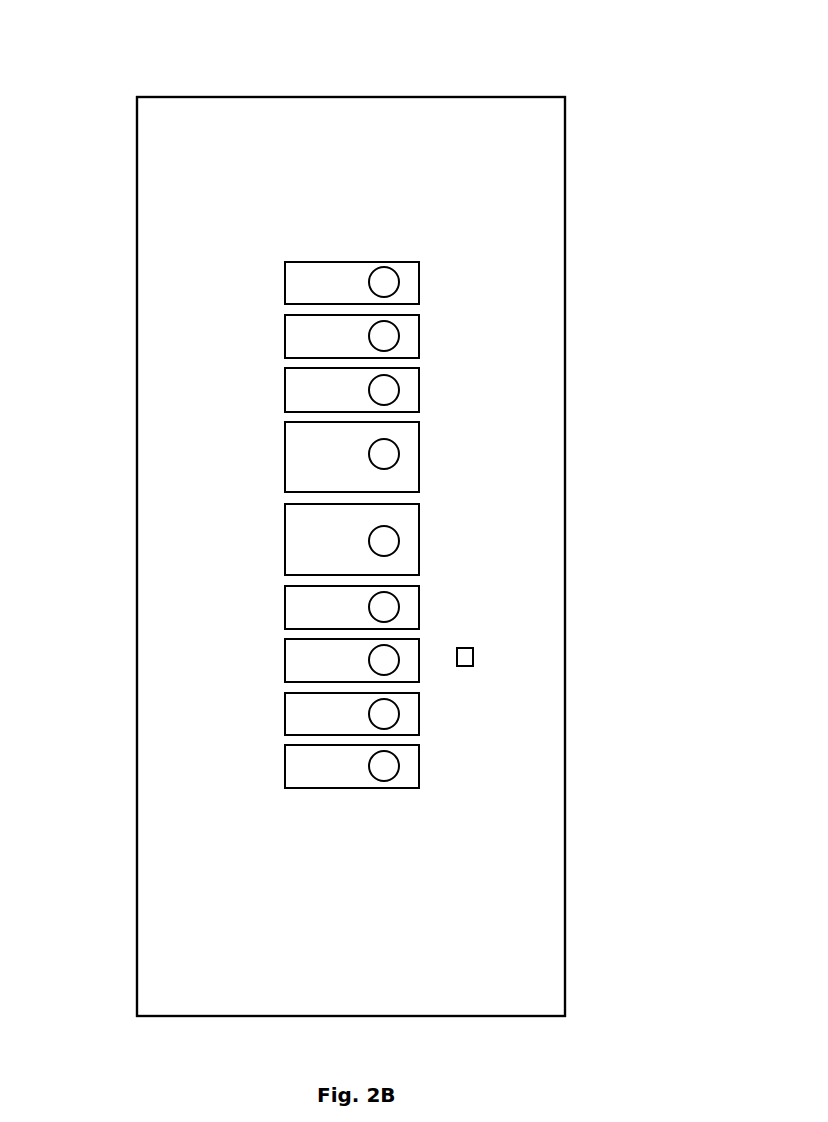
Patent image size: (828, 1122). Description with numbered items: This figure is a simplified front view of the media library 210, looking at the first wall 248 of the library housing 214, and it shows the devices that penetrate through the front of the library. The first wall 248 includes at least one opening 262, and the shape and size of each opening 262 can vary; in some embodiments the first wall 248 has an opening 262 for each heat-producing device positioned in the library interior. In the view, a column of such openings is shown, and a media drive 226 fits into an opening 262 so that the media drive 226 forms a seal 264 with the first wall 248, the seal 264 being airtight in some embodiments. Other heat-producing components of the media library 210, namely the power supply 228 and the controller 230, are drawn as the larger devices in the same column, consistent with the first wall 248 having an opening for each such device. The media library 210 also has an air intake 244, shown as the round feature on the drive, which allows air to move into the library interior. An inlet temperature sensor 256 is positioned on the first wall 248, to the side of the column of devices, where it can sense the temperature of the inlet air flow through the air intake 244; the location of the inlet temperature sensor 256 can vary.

The media library 210 is at (167, 66).
The library housing 214 is at (233, 96).
The first wall 248 is at (155, 796).
The opening 262 is at (285, 270).
The seal 264 is at (285, 300).
The air intake 244 is at (398, 275).
The media drive 226 is at (419, 293).
The power supply 228 is at (285, 461).
The controller 230 is at (285, 558).
The inlet temperature sensor 256 is at (473, 657).